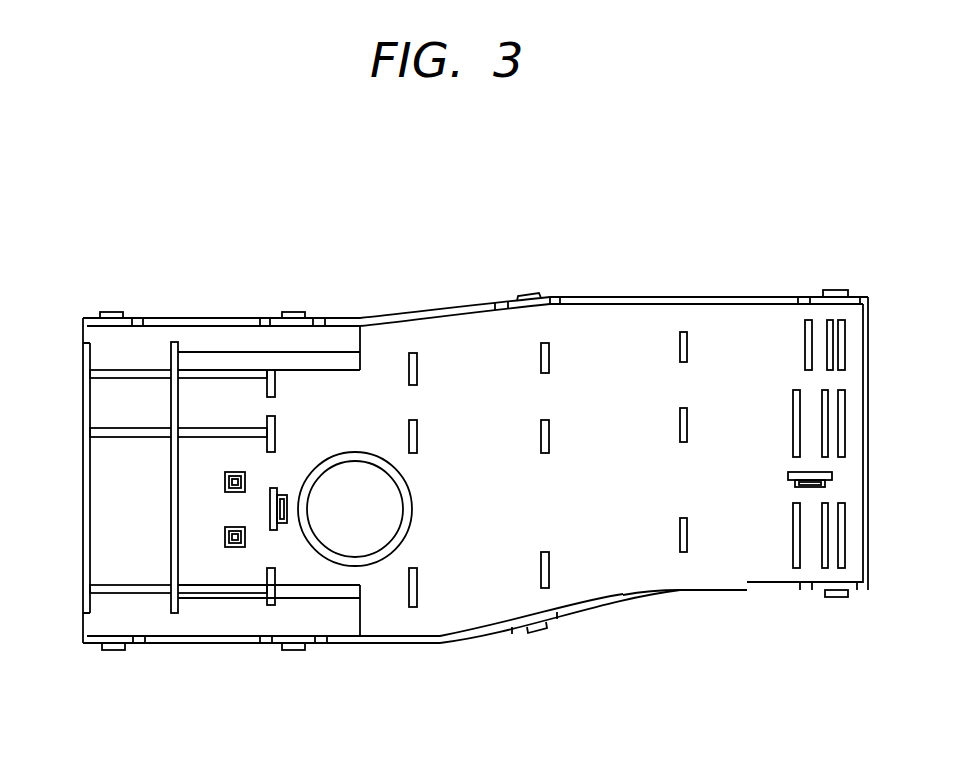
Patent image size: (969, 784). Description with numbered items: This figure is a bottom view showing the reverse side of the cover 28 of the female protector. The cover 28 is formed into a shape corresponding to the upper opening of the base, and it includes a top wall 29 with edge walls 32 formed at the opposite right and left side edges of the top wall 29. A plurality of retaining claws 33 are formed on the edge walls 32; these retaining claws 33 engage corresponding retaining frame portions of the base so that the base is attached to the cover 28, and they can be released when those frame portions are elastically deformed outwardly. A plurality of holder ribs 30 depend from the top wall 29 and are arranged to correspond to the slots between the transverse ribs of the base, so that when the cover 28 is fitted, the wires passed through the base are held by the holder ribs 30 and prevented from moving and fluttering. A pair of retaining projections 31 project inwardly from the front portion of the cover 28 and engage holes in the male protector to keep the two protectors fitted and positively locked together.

The cover 28 is at (407, 314).
The top wall 29 is at (468, 597).
The holder ribs 30 is at (418, 585).
The retaining projections 31 is at (225, 481).
The edge walls 32 is at (200, 318).
The retaining claws 33 is at (112, 312).